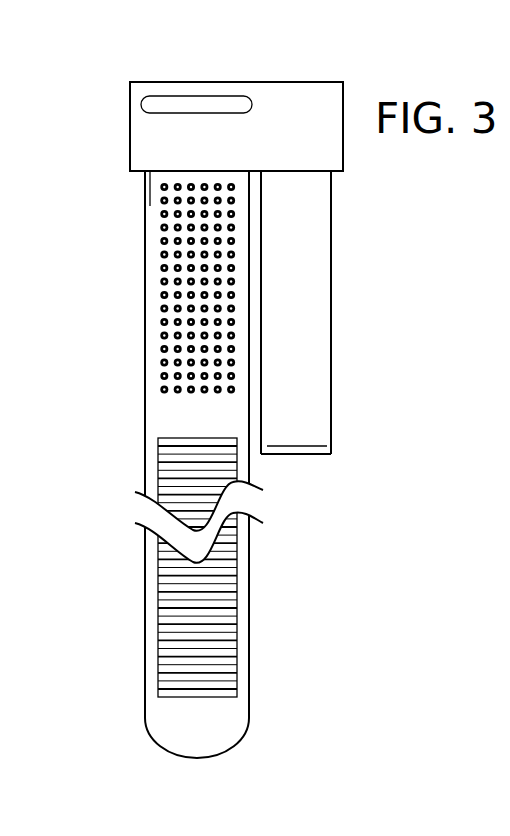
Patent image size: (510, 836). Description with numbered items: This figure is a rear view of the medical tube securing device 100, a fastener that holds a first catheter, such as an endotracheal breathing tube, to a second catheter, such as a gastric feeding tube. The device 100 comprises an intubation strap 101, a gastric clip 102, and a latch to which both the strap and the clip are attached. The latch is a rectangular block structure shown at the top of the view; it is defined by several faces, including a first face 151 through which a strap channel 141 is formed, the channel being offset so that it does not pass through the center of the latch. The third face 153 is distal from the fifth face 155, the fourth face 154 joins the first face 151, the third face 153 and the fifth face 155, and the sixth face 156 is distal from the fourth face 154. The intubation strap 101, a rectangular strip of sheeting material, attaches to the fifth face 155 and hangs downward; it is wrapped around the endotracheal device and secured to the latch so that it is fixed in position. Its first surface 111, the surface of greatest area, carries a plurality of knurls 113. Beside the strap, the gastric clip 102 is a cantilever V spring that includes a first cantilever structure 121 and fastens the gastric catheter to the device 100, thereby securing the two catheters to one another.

The medical tube securing device 100 is at (68, 112).
The intubation strap 101 is at (249, 697).
The gastric clip 102 is at (313, 365).
The first surface 111 is at (175, 607).
The plurality of knurls 113 is at (163, 323).
The first cantilever structure 121 is at (312, 300).
The strap channel 141 is at (163, 100).
The first face 151 is at (268, 112).
The third face 153 is at (207, 82).
The fourth face 154 is at (343, 145).
The fifth face 155 is at (150, 205).
The sixth face 156 is at (130, 142).